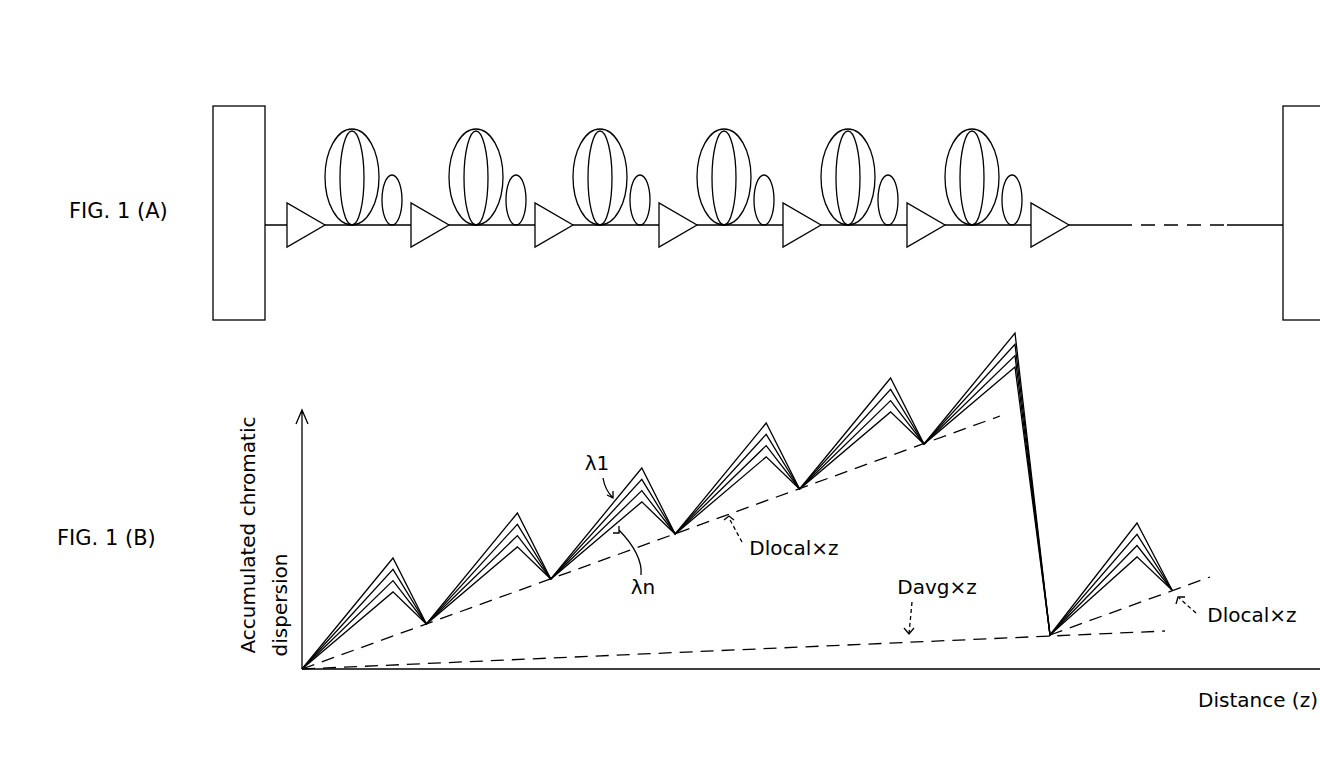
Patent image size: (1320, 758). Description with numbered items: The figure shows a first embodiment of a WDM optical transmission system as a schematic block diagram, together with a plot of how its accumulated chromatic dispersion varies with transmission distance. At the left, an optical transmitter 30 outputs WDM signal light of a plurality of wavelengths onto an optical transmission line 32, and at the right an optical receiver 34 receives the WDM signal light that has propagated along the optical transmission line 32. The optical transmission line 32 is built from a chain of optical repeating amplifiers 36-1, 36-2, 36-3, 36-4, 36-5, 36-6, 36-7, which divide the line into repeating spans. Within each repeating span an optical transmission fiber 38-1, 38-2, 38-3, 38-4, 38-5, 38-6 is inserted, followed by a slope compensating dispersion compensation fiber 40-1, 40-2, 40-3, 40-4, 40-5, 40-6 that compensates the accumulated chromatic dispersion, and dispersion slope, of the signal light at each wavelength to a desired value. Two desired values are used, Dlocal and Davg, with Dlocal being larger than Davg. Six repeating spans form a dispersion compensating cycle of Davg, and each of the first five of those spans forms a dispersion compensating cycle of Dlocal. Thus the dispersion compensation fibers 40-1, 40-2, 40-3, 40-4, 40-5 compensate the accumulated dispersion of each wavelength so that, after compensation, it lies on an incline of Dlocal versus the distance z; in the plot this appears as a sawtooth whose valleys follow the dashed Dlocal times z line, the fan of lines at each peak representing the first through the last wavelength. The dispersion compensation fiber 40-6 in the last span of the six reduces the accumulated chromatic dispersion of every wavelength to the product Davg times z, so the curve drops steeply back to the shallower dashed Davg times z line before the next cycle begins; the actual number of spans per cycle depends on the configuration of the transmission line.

The optical transmitter 30 is at (237, 321).
The optical transmission line 32 is at (724, 78).
The optical receiver 34 is at (1307, 322).
The optical repeating amplifier 36-1 is at (301, 230).
The optical repeating amplifier 36-2 is at (425, 230).
The optical repeating amplifier 36-3 is at (549, 230).
The optical repeating amplifier 36-4 is at (673, 232).
The optical repeating amplifier 36-5 is at (797, 230).
The optical repeating amplifier 36-6 is at (921, 230).
The optical repeating amplifier 36-7 is at (1050, 238).
The optical transmission fiber 38-1 is at (352, 146).
The optical transmission fiber 38-2 is at (476, 147).
The optical transmission fiber 38-3 is at (600, 147).
The optical transmission fiber 38-4 is at (724, 147).
The optical transmission fiber 38-5 is at (848, 147).
The optical transmission fiber 38-6 is at (972, 146).
The slope compensating dispersion compensation fiber 40-1 is at (393, 187).
The slope compensating dispersion compensation fiber 40-2 is at (517, 187).
The slope compensating dispersion compensation fiber 40-3 is at (641, 187).
The slope compensating dispersion compensation fiber 40-4 is at (765, 187).
The slope compensating dispersion compensation fiber 40-5 is at (889, 187).
The slope compensating dispersion compensation fiber 40-6 is at (1015, 187).